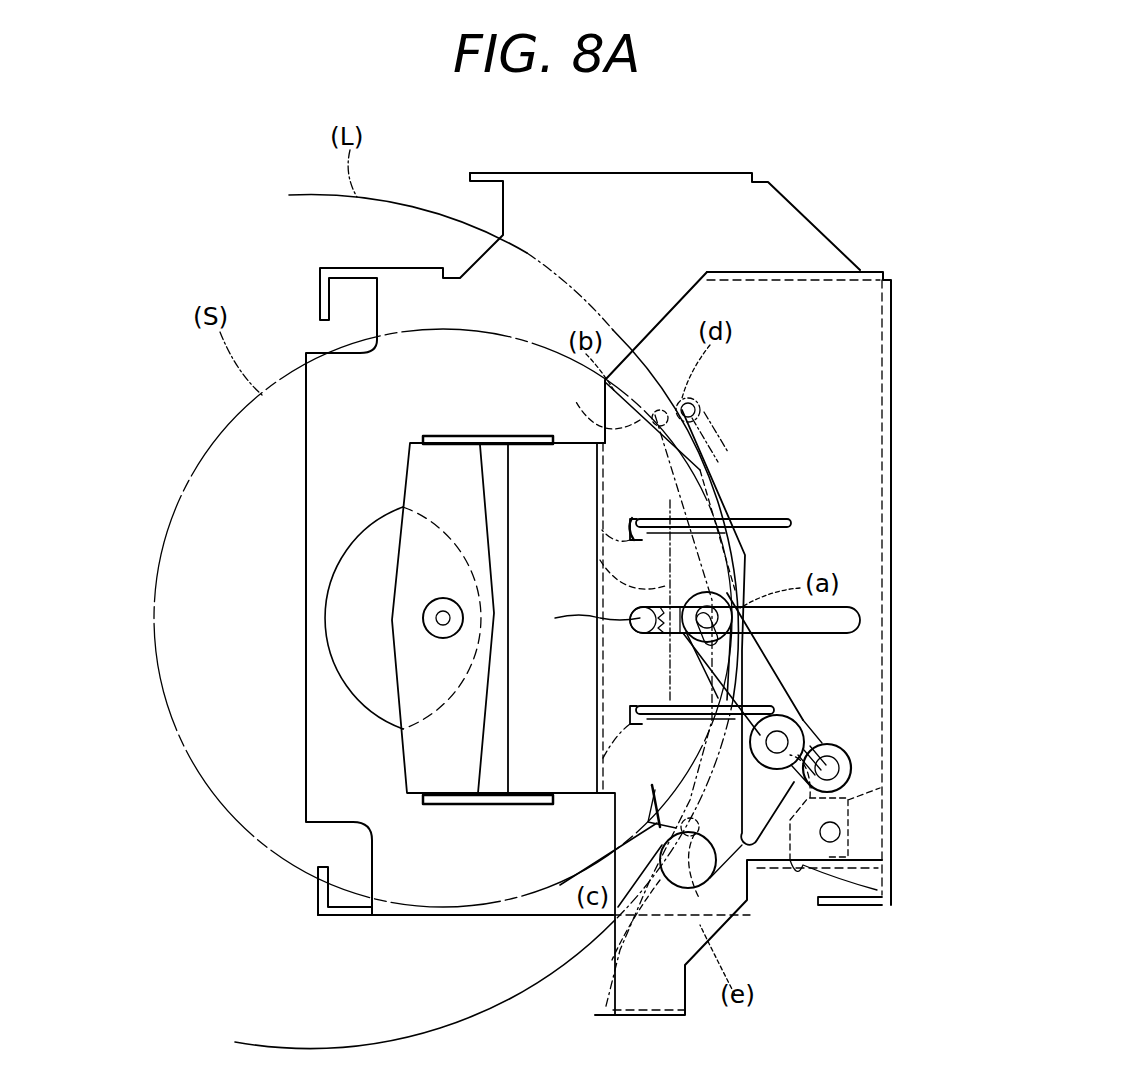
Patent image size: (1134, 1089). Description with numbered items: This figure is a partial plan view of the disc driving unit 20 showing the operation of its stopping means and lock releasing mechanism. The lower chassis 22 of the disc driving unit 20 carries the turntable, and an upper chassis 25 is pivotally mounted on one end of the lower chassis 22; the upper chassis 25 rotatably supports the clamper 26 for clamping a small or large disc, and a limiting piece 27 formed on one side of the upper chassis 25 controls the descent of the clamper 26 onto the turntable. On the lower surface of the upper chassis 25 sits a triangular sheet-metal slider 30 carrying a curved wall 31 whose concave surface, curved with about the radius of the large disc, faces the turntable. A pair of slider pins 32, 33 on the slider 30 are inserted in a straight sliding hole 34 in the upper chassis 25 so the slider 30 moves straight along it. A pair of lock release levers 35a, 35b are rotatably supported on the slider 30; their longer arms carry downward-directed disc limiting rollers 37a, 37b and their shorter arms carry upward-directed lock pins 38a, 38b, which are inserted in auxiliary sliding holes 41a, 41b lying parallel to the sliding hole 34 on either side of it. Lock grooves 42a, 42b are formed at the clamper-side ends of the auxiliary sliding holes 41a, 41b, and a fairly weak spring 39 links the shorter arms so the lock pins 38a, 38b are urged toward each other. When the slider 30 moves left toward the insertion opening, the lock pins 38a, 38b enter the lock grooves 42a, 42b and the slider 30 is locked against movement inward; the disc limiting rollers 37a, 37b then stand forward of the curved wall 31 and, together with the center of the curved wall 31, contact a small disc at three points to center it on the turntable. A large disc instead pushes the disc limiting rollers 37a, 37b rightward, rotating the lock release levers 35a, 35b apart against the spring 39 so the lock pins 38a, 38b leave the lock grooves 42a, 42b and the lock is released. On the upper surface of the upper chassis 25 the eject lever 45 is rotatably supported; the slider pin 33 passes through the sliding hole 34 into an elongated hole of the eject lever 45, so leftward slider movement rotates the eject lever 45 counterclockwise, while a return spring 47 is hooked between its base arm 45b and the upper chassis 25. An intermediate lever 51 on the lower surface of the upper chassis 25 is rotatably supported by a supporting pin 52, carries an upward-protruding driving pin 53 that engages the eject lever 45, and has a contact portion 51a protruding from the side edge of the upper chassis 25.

The disc driving unit 20 is at (920, 352).
The lower chassis 22 is at (627, 185).
The upper chassis 25 is at (862, 272).
The clamper 26 is at (325, 620).
The limiting piece 27 is at (685, 1020).
The slider 30 is at (622, 660).
The curved wall 31 is at (716, 440).
The slider pin 32 is at (577, 626).
The slider pin 33 is at (707, 605).
The sliding hole 34 is at (860, 618).
The lock release lever 35a is at (652, 418).
The lock release lever 35b is at (655, 832).
The disc limiting roller 37a is at (652, 400).
The disc limiting roller 37b is at (620, 952).
The lock pin 38a is at (630, 520).
The lock pin 38b is at (650, 800).
The spring 39 is at (600, 567).
The auxiliary sliding hole 41a is at (790, 521).
The auxiliary sliding hole 41b is at (790, 712).
The lock groove 42a is at (630, 532).
The lock groove 42b is at (630, 716).
The eject lever 45 is at (770, 690).
The base arm 45b is at (762, 843).
The return spring 47 is at (700, 880).
The intermediate lever 51 is at (880, 793).
The contact portion 51a is at (877, 890).
The supporting pin 52 is at (840, 832).
The driving pin 53 is at (848, 757).